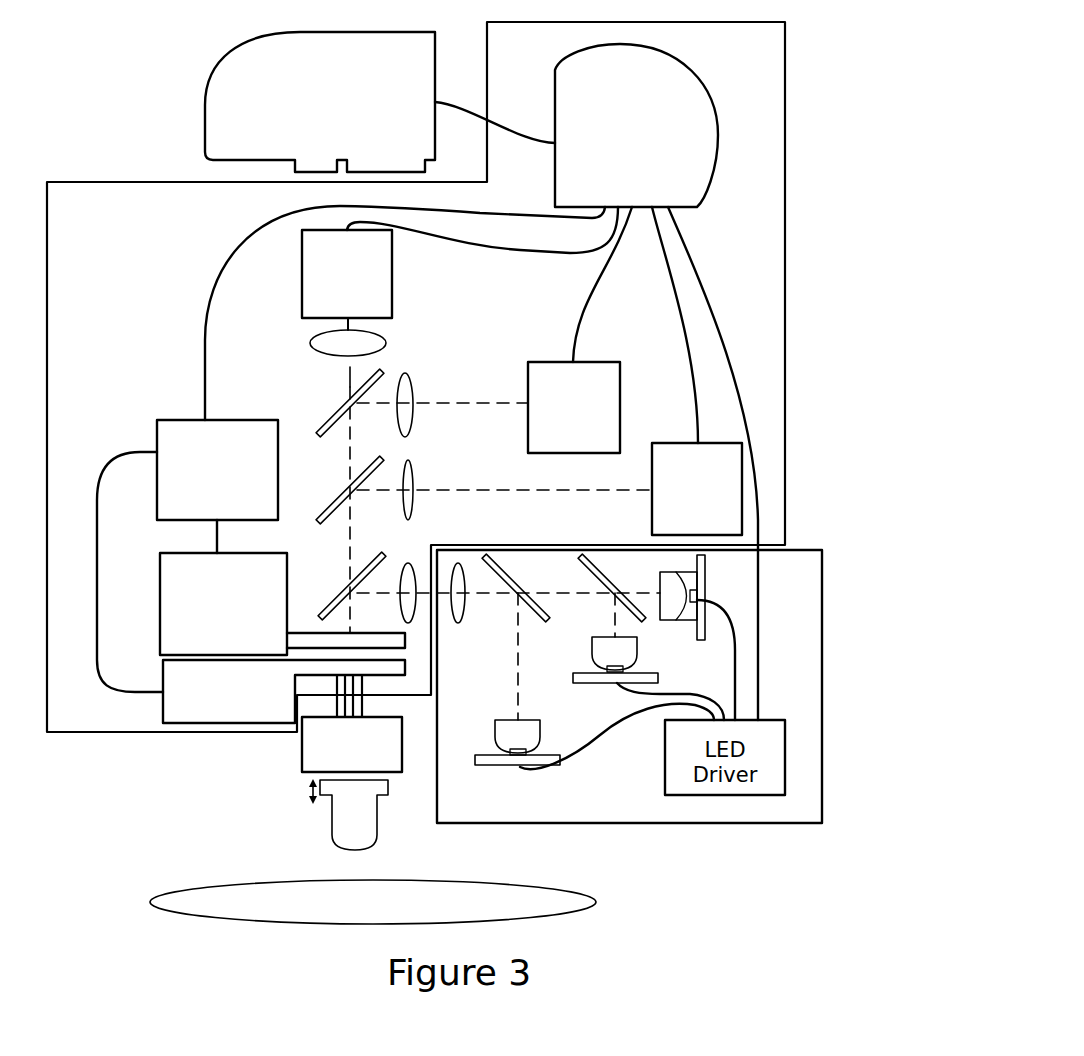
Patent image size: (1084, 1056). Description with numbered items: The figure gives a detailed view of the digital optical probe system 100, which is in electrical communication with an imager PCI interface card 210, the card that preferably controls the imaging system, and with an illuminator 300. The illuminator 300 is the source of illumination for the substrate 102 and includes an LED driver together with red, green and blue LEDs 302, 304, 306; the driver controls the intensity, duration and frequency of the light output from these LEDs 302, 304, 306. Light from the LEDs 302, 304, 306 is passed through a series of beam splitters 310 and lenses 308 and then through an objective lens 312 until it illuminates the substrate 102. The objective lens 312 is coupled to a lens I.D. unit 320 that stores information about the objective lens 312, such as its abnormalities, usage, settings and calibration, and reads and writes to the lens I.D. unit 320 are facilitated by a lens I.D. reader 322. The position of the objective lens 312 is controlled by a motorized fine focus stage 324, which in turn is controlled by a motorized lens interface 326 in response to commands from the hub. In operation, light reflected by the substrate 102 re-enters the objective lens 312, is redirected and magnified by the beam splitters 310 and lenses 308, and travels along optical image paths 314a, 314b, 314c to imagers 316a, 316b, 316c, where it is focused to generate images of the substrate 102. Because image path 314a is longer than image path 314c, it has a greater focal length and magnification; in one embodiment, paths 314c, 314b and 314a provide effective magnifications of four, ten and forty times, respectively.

The digital optical probe system 100 is at (751, 70).
The substrate 102 is at (598, 902).
The imager PCI interface card 210 is at (205, 110).
The illuminator 300 is at (810, 622).
The LED 302 is at (503, 765).
The LED 304 is at (588, 682).
The LED 306 is at (683, 620).
The lens 308 is at (405, 373).
The beam splitter 310 is at (333, 428).
The objective lens 312 is at (332, 840).
The image path 314a is at (527, 492).
The image path 314b is at (471, 405).
The image path 314c is at (348, 383).
The imager 316a is at (663, 443).
The imager 316b is at (603, 362).
The imager 316c is at (392, 270).
The lens I.D. unit 320 is at (302, 755).
The lens I.D. reader 322 is at (163, 707).
The motorized fine focus stage 324 is at (168, 553).
The motorized lens interface 326 is at (170, 420).